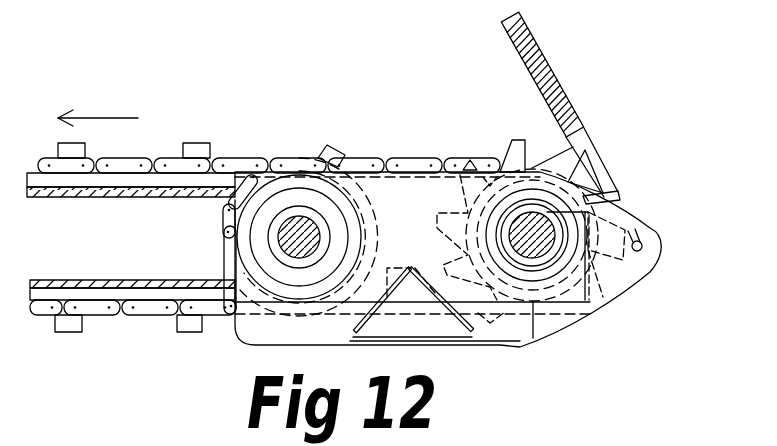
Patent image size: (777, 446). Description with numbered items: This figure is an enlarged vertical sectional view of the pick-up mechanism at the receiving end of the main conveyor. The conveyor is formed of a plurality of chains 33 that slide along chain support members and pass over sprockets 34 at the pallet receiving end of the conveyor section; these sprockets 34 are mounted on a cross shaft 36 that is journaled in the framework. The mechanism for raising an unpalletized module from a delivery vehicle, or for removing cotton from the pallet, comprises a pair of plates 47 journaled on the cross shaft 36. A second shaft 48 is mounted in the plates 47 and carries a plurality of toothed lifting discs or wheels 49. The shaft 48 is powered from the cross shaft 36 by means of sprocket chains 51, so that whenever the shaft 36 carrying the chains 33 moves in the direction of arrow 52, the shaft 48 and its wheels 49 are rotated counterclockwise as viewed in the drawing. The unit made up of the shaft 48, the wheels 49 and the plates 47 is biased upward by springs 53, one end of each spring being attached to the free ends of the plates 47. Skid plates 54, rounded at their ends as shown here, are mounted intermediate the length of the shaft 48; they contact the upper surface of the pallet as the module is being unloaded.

The chains 33 is at (173, 165).
The sprockets 34 is at (232, 200).
The cross shaft 36 is at (292, 243).
The plates 47 is at (658, 238).
The shaft 48 is at (532, 250).
The toothed lifting discs or wheels 49 is at (570, 180).
The sprocket chains 51 is at (392, 158).
The arrow 52 is at (94, 118).
The springs 53 is at (550, 77).
The skid plates 54 is at (613, 300).